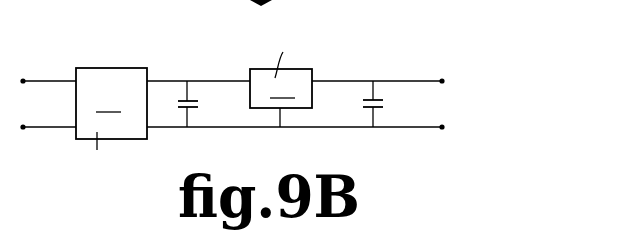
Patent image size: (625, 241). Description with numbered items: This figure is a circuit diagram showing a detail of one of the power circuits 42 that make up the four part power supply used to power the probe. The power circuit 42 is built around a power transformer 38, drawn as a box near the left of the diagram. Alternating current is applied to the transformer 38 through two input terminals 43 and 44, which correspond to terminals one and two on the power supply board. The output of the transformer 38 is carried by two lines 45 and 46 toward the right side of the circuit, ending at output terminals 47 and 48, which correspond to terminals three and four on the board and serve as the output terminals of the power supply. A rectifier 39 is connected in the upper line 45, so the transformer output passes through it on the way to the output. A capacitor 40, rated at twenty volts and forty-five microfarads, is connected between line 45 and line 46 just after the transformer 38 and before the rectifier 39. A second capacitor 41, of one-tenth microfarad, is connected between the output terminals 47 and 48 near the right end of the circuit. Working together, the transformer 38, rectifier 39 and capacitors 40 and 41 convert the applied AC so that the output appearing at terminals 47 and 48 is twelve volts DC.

The power transformer 38 is at (134, 120).
The rectifier 39 is at (316, 82).
The capacitor 40 is at (178, 112).
The capacitor 41 is at (363, 102).
The power circuit 42 is at (119, 43).
The terminal 43 is at (48, 80).
The terminal 44 is at (50, 129).
The line 45 is at (227, 80).
The line 46 is at (217, 128).
The terminal 47 is at (440, 80).
The terminal 48 is at (443, 129).